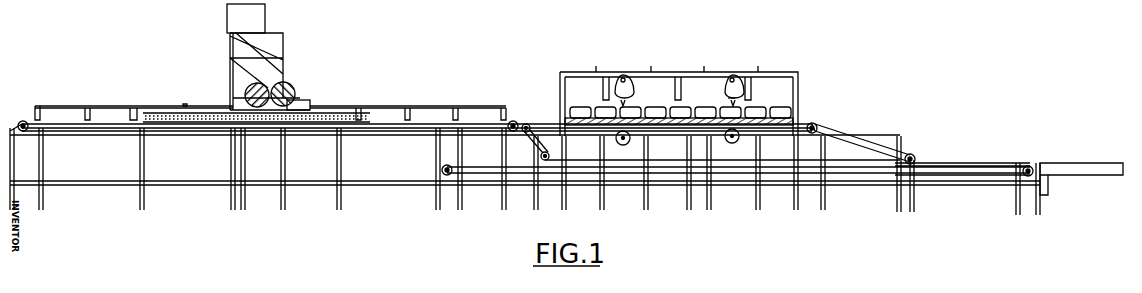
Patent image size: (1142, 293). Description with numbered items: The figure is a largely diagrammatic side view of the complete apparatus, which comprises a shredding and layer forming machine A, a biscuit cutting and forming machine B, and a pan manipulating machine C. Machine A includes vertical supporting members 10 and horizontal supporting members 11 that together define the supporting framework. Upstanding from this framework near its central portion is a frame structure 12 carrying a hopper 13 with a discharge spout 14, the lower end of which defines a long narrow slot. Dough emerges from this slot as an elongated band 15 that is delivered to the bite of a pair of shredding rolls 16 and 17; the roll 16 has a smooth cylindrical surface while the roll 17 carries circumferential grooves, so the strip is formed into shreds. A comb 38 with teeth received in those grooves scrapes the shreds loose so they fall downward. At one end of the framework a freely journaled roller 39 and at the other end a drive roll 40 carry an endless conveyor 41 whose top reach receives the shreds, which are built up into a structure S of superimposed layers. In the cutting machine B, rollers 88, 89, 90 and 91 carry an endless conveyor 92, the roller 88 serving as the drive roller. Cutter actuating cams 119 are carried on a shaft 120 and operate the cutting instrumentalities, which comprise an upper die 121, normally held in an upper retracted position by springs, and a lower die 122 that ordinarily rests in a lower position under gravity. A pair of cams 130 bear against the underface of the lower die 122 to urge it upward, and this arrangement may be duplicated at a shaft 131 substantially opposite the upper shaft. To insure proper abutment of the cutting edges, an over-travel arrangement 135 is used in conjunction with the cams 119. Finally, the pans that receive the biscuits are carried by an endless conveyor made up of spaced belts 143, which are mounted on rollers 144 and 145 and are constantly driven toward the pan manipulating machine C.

The vertical supporting members 10 is at (140, 208).
The horizontal supporting members 11 is at (432, 105).
The frame structure 12 is at (266, 33).
The hopper 13 is at (259, 15).
The discharge spout 14 is at (266, 54).
The elongated band of dough 15 is at (273, 86).
The shredding roll 16 is at (247, 88).
The shredding roll 17 is at (292, 104).
The comb 38 is at (307, 106).
The roller 39 is at (23, 120).
The drive roll 40 is at (513, 120).
The endless conveyor 41 is at (88, 136).
The roller 88 is at (526, 124).
The roller 89 is at (548, 149).
The roller 90 is at (815, 125).
The roller 91 is at (912, 157).
The endless conveyor 92 is at (855, 137).
The cutter actuating cams 119 is at (740, 80).
The shaft 120 is at (623, 75).
The upper die 121 is at (788, 112).
The lower die 122 is at (795, 121).
The cams 130 is at (732, 143).
The shaft 131 is at (623, 145).
The over-travel arrangement 135 is at (728, 100).
The spaced belts 143 is at (497, 156).
The roller 144 is at (442, 170).
The roller 145 is at (1032, 165).
The shredding and layer forming machine A is at (259, 55).
The biscuit cutting and forming machine B is at (706, 91).
The pan manipulating machine C is at (1009, 157).
The layered shred structure S is at (364, 116).